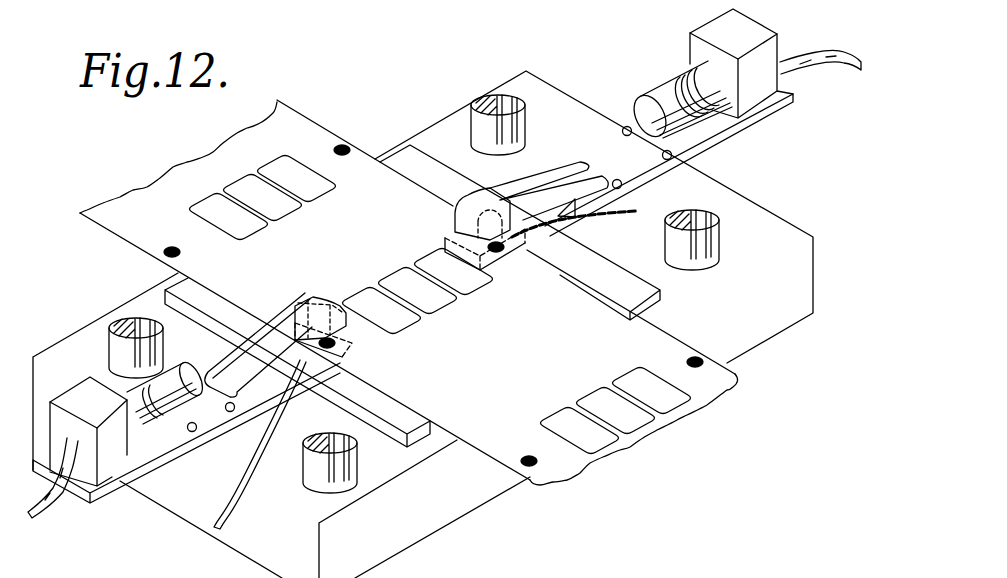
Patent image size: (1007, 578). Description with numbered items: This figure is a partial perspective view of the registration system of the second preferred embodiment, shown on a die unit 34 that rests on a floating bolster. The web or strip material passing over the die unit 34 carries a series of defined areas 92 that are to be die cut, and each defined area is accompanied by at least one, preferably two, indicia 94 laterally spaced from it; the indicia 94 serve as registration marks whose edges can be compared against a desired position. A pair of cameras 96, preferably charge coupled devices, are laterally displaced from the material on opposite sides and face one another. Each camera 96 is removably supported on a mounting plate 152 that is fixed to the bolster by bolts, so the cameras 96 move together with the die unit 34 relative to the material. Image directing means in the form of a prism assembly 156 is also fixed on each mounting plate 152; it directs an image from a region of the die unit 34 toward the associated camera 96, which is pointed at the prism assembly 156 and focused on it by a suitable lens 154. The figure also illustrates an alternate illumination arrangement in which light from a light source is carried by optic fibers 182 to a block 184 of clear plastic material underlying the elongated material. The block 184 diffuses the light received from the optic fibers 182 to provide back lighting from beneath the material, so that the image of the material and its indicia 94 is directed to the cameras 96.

The die unit 34 is at (822, 222).
The defined areas 92 is at (240, 180).
The indicia 94 is at (345, 151).
The cameras 96 is at (725, 27).
The mounting plate 152 is at (710, 132).
The lens 154 is at (678, 80).
The prism assembly 156 is at (440, 223).
The optic fibers 182 is at (616, 210).
The block 184 is at (512, 277).